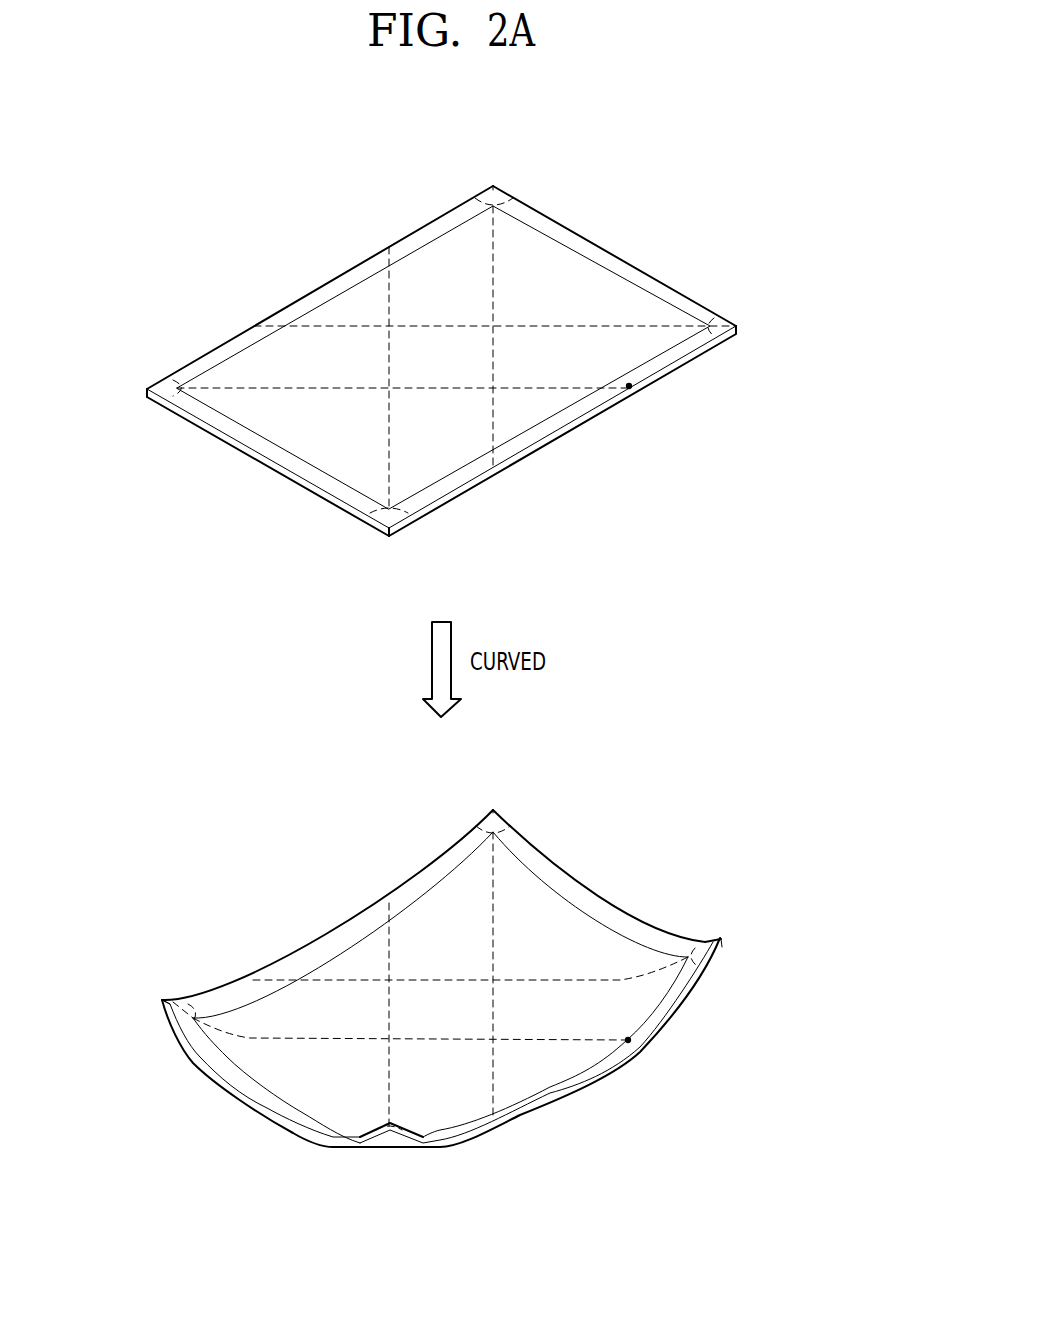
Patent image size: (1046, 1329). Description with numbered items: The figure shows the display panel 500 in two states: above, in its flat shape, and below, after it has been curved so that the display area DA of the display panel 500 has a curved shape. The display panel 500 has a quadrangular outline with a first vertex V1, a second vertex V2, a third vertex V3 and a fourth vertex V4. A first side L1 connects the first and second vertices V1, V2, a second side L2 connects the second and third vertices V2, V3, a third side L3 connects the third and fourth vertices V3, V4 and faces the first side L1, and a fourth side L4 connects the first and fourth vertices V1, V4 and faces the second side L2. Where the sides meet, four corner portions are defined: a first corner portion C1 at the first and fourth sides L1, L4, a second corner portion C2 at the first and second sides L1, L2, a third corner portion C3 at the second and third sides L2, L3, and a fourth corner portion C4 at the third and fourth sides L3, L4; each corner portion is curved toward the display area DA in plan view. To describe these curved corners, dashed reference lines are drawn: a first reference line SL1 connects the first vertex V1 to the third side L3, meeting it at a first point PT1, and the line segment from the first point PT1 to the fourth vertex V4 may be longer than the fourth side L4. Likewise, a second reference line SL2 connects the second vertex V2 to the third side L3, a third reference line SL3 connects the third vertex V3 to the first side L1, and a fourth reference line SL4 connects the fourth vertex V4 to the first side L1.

The display panel 500 is at (736, 138).
The first side L1 is at (320, 283).
The second side L2 is at (597, 242).
The third side L3 is at (565, 430).
The fourth side L4 is at (257, 458).
The first vertex V1 is at (147, 389).
The second vertex V2 is at (493, 187).
The third vertex V3 is at (735, 327).
The fourth vertex V4 is at (388, 530).
The first corner portion C1 is at (175, 382).
The second corner portion C2 is at (505, 202).
The third corner portion C3 is at (704, 318).
The fourth corner portion C4 is at (378, 512).
The first reference line SL1 is at (250, 389).
The second reference line SL2 is at (493, 248).
The third reference line SL3 is at (695, 378).
The fourth reference line SL4 is at (389, 466).
The first point PT1 is at (640, 390).
The display area DA is at (460, 468).